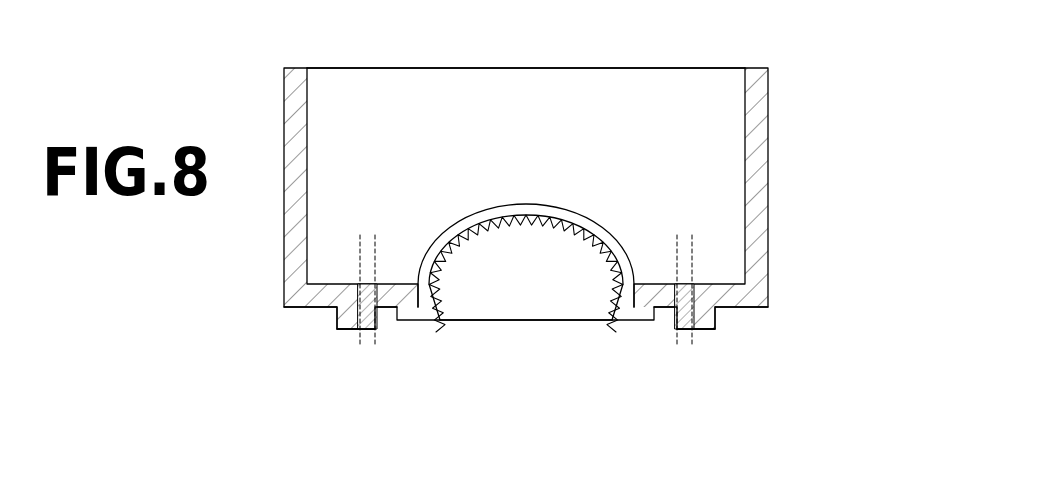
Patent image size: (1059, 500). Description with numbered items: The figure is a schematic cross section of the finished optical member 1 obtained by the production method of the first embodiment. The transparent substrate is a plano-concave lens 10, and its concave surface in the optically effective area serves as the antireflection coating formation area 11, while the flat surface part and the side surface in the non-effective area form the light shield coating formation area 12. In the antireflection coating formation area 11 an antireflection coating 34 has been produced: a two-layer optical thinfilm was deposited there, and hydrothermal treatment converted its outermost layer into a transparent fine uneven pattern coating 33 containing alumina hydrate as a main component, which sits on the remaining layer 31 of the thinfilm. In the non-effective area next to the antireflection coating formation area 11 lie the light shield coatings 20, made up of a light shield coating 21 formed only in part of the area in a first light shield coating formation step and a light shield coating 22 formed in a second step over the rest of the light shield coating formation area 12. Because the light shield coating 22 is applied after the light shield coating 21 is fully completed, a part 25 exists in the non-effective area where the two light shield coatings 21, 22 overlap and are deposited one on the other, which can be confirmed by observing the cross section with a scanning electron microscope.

The optical member 1 is at (814, 36).
The plano-concave lens 10 is at (660, 75).
The antireflection coating formation area 11 is at (545, 334).
The light shield coating formation area 12 is at (282, 226).
The light shield coatings 20 is at (422, 394).
The light shield coating 21 is at (388, 318).
The light shield coating 22 is at (767, 132).
The part 25 is at (366, 236).
The layer 31 is at (487, 230).
The fine uneven pattern coating 33 is at (455, 248).
The antireflection coating 34 is at (537, 309).